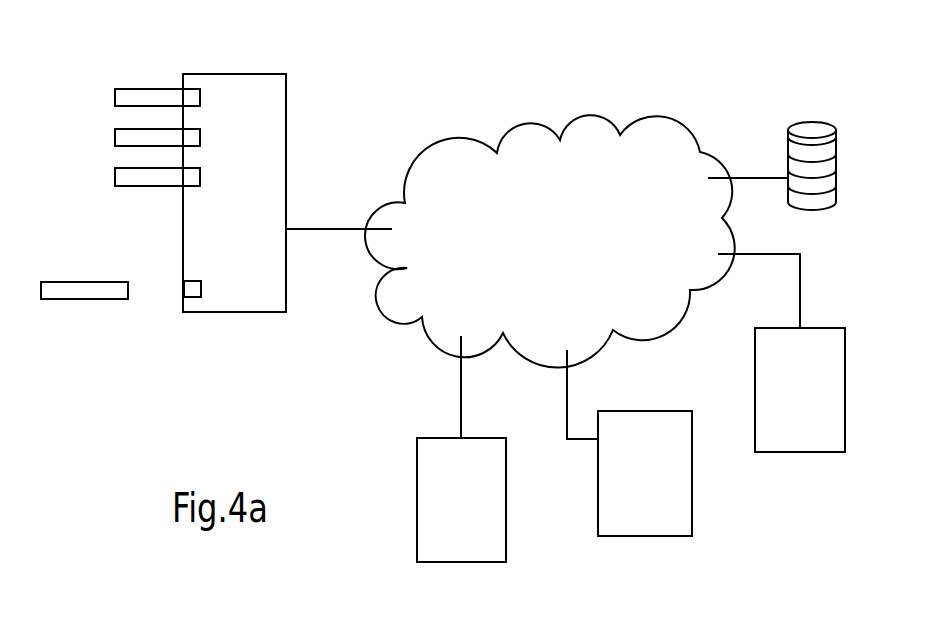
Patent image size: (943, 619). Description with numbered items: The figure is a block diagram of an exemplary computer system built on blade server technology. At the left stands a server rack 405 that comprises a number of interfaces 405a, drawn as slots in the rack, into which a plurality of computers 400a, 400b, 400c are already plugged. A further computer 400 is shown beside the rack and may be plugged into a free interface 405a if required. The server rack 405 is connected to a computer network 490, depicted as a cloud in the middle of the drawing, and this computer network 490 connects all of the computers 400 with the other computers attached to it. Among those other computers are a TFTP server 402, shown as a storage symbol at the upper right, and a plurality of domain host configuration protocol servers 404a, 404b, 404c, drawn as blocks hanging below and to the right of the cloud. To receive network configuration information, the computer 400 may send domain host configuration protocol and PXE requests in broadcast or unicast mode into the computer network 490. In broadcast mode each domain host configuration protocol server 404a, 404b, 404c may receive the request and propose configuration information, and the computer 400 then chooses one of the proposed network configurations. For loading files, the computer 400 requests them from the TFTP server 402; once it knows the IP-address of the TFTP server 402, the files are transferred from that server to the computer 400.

The computer 400 is at (63, 282).
The computer 400a is at (133, 89).
The computer 400b is at (115, 133).
The computer 400c is at (115, 175).
The server rack 405 is at (247, 74).
The interface 405a is at (192, 281).
The computer network 490 is at (556, 301).
The TFTP server 402 is at (822, 122).
The domain host configuration protocol server 404a is at (673, 513).
The domain host configuration protocol server 404b is at (830, 430).
The domain host configuration protocol server 404c is at (490, 540).